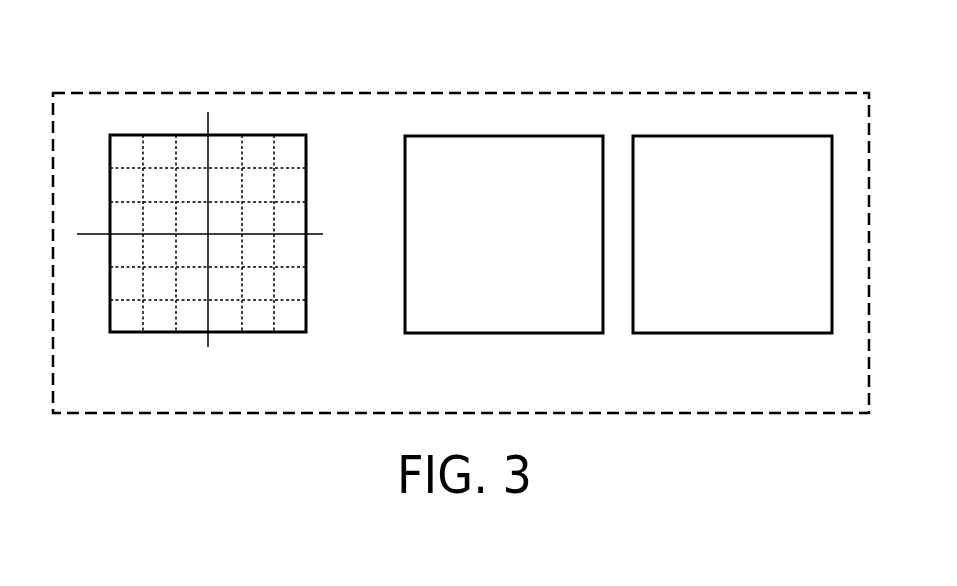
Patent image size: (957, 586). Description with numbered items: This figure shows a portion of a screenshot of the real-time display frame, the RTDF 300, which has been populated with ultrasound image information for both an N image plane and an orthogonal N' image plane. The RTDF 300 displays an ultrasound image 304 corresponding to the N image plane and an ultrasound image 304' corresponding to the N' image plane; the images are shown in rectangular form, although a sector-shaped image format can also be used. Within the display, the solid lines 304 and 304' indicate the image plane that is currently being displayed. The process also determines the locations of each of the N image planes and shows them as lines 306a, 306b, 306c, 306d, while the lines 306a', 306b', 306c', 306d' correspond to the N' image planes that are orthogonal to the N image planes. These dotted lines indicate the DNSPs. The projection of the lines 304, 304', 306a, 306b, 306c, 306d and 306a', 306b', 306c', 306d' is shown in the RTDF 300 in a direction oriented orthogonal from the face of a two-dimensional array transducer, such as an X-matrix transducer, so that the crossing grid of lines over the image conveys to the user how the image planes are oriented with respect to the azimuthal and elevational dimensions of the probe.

The RTDF 300 is at (512, 92).
The ultrasound image 304 is at (471, 247).
The ultrasound image 304' is at (192, 200).
The line 306a is at (127, 256).
The line 306b is at (175, 271).
The line 306c is at (224, 256).
The line 306d is at (274, 271).
The line 306a' is at (245, 153).
The line 306b' is at (245, 187).
The line 306c' is at (245, 252).
The line 306d' is at (245, 284).